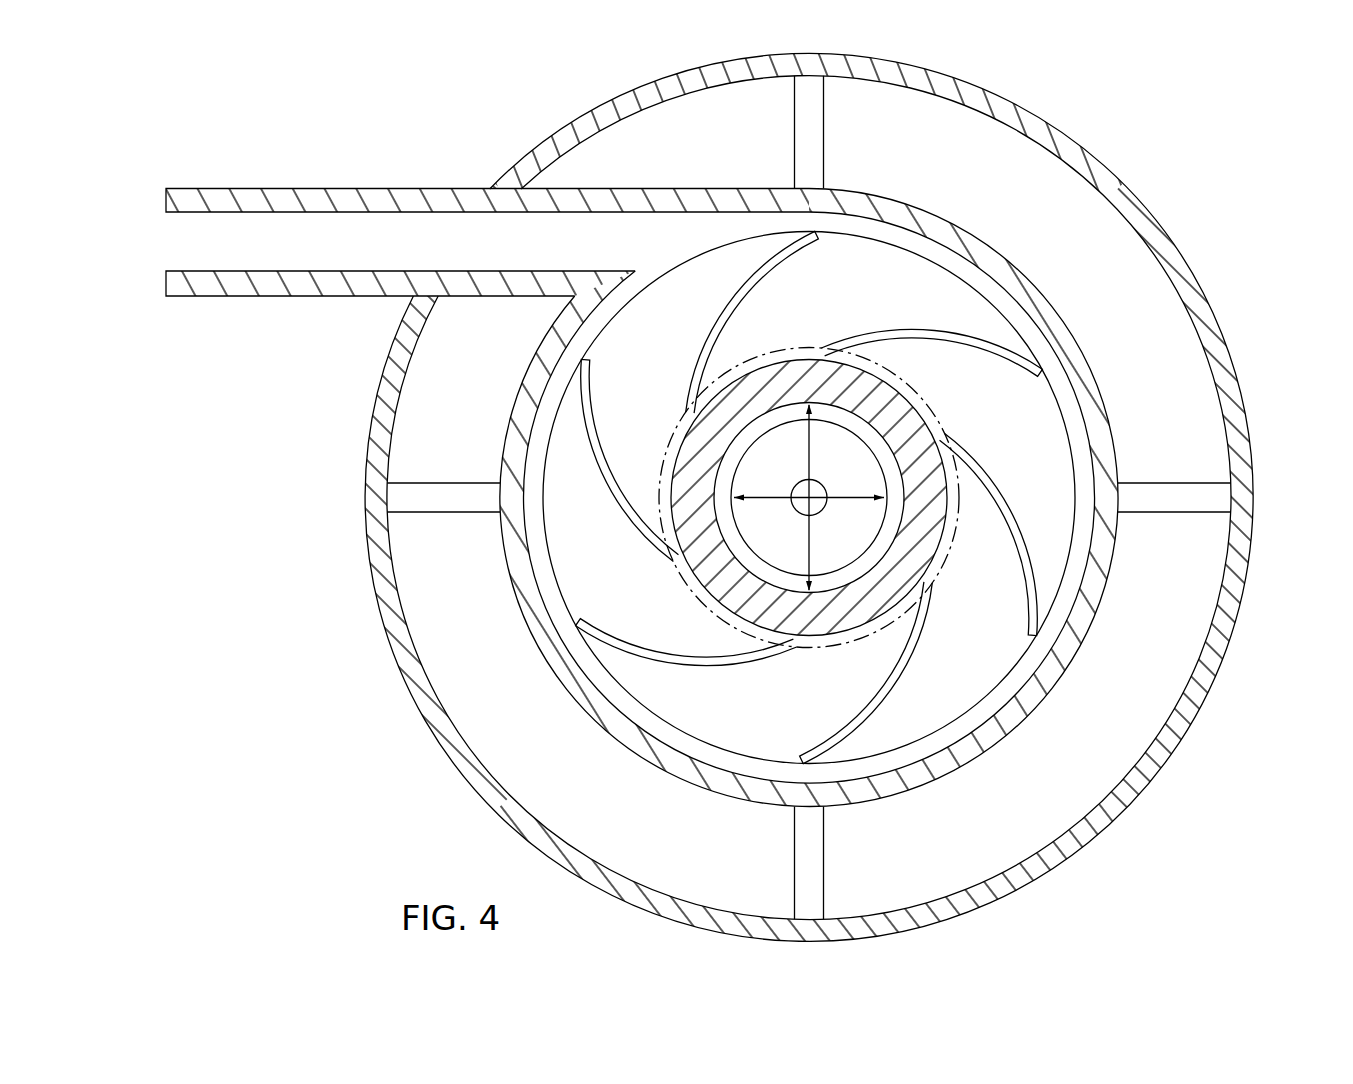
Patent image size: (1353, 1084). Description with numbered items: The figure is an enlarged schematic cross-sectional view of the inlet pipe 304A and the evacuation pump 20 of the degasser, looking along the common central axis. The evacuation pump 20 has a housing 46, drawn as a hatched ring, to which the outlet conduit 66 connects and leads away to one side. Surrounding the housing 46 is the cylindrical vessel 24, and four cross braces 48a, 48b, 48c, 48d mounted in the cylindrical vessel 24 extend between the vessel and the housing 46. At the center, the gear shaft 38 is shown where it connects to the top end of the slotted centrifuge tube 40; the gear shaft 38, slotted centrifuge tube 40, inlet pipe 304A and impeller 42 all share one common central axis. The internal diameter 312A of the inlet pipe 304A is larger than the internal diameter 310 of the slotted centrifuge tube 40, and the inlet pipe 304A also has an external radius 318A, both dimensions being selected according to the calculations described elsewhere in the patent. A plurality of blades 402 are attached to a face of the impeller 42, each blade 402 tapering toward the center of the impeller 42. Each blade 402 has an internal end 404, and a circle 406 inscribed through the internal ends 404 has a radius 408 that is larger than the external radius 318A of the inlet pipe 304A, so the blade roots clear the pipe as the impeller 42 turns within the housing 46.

The evacuation pump 20 is at (228, 122).
The outlet conduit 66 is at (130, 237).
The cylindrical vessel 24 is at (1213, 662).
The housing 46 is at (1018, 268).
The impeller 42 is at (947, 267).
The gear shaft 38 is at (798, 480).
The internal diameter of the slotted centrifuge tube 310 is at (893, 555).
The slotted centrifuge tube 40 is at (757, 437).
The blades 402 is at (603, 455).
The internal end 404 is at (687, 560).
The circle 406 is at (912, 412).
The radius 408 is at (687, 578).
The inlet pipe 304A is at (903, 393).
The internal diameter of the inlet pipe 312A is at (800, 640).
The external radius of the inlet pipe 318A is at (895, 592).
The cross brace 48a is at (812, 117).
The cross brace 48b is at (1192, 494).
The cross brace 48c is at (810, 873).
The cross brace 48d is at (420, 503).